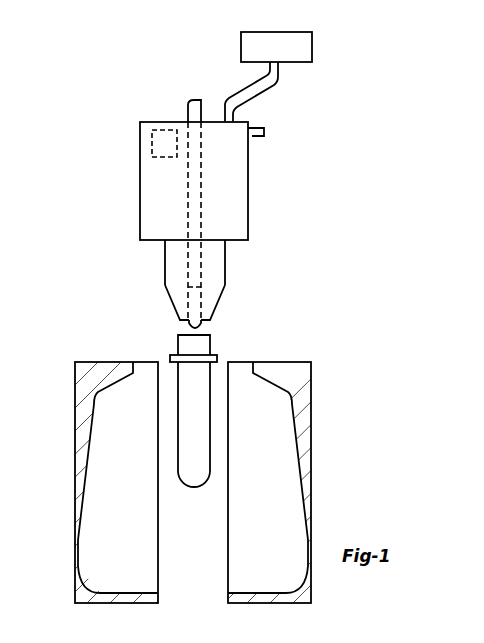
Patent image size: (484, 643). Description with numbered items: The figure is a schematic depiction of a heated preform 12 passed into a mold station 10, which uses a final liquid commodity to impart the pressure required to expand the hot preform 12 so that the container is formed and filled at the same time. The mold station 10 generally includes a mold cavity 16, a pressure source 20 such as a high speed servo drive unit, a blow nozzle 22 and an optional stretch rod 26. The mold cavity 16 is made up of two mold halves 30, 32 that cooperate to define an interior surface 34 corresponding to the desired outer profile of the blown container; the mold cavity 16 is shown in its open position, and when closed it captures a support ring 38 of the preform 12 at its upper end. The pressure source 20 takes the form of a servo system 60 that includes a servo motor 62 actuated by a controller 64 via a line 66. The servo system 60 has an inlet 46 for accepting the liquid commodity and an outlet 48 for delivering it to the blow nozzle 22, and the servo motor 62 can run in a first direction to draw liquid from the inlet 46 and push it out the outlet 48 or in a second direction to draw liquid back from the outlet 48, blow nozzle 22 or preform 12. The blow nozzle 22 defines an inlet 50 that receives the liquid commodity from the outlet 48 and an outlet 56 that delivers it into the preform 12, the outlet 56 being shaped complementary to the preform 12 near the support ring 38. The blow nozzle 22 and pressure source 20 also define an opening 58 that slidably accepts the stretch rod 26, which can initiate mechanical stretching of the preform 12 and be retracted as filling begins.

The mold station 10 is at (130, 162).
The preform 12 is at (207, 373).
The mold cavity 16 is at (290, 412).
The pressure source 20 is at (249, 193).
The blow nozzle 22 is at (165, 272).
The stretch rod 26 is at (202, 287).
The mold half 30 is at (75, 398).
The mold half 32 is at (310, 438).
The interior surface 34 is at (92, 467).
The support ring 38 is at (168, 358).
The inlet 46 is at (252, 137).
The outlet 48 is at (165, 256).
The inlet 50 is at (225, 272).
The outlet 56 is at (186, 325).
The opening 58 is at (186, 122).
The servo system 60 is at (155, 193).
The servo motor 62 is at (157, 128).
The controller 64 is at (308, 31).
The line 66 is at (270, 88).